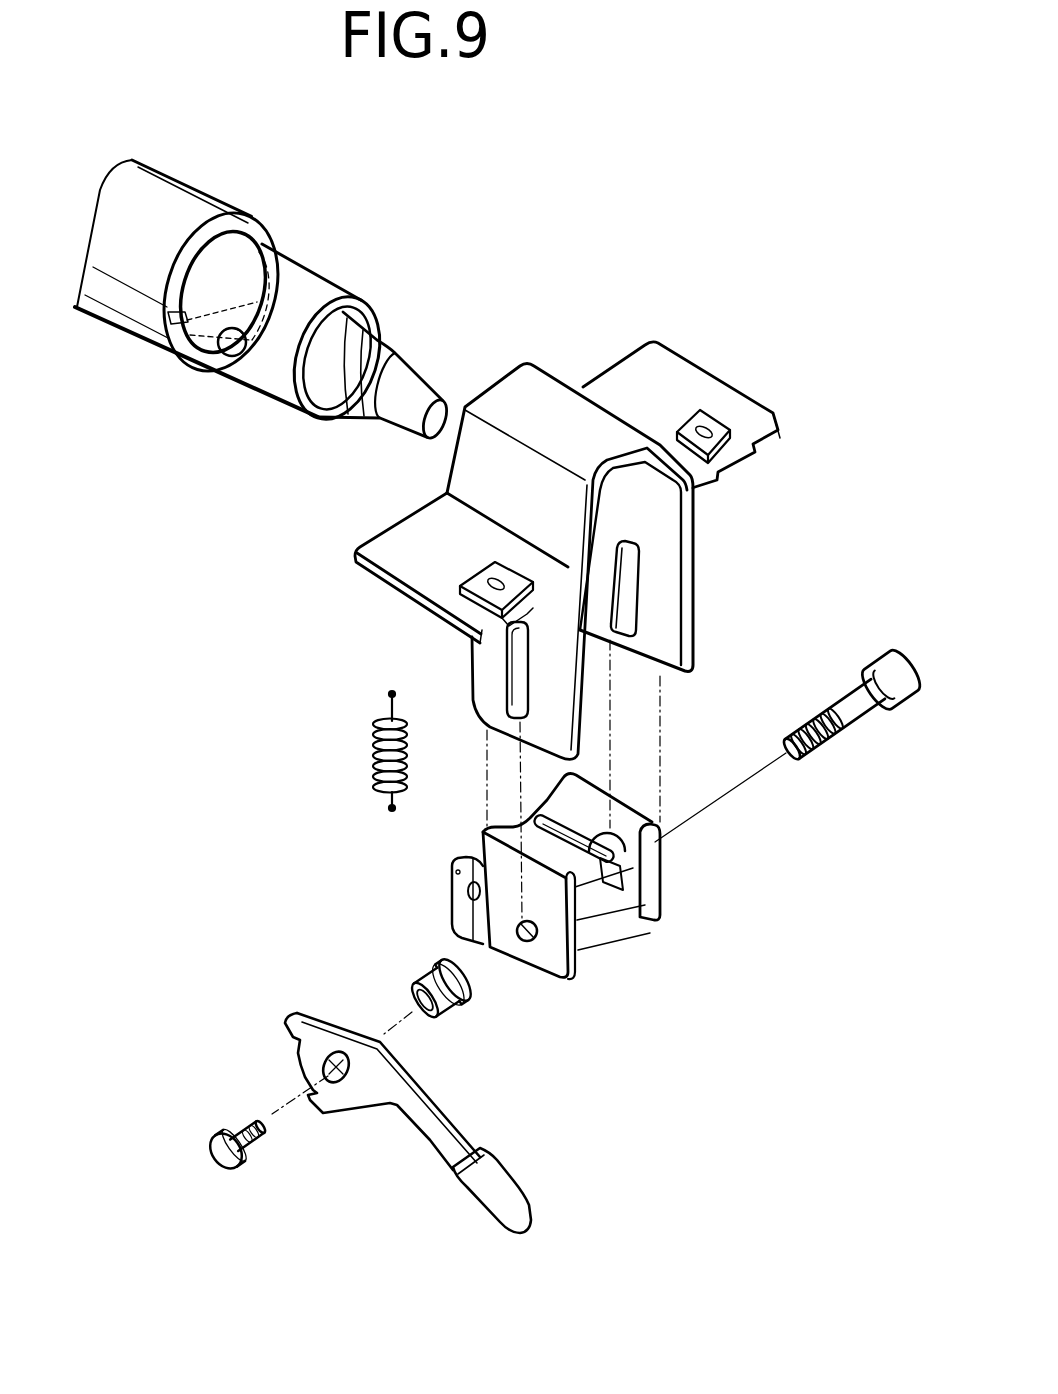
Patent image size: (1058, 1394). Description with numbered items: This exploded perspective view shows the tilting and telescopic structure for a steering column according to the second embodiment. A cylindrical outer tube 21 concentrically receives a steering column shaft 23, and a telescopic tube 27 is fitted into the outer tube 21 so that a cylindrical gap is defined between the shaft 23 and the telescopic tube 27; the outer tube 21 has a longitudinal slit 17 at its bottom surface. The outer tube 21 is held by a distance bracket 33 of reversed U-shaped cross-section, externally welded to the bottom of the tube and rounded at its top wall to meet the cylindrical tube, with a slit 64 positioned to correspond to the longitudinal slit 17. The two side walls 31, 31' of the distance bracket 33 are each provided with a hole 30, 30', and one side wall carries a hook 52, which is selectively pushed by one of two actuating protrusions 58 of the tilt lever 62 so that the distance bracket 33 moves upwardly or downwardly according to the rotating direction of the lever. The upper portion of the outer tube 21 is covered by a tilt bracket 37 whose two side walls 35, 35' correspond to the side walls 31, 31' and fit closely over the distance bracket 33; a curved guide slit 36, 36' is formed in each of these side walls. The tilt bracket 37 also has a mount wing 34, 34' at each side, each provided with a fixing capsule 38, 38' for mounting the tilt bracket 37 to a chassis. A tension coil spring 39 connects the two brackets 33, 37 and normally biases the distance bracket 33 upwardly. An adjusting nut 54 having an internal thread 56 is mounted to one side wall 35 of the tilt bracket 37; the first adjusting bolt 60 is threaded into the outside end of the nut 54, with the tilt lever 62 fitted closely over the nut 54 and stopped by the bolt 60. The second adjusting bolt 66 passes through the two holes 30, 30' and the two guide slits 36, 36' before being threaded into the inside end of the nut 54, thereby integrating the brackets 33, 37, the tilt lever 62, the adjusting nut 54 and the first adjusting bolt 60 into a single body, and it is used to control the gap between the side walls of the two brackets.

The longitudinal slit 17 is at (242, 358).
The outer tube 21 is at (190, 200).
The steering column shaft 23 is at (438, 372).
The telescopic tube 27 is at (320, 282).
The hole 30 is at (526, 983).
The hole 30' is at (621, 917).
The side wall 31 is at (566, 968).
The side wall 31' is at (709, 872).
The distance bracket 33 is at (611, 939).
The mount wing 34 is at (382, 568).
The mount wing 34' is at (681, 382).
The side wall 35 is at (540, 603).
The side wall 35' is at (690, 566).
The curved guide slit 36 is at (473, 675).
The curved guide slit 36' is at (691, 579).
The tilt bracket 37 is at (556, 465).
The fixing capsule 38 is at (425, 605).
The fixing capsule 38' is at (754, 400).
The tension coil spring 39 is at (373, 757).
The hook 52 is at (452, 905).
The adjusting nut 54 is at (452, 1003).
The internal thread 56 is at (410, 1000).
The actuating protrusion 58 is at (389, 1077).
The first adjusting bolt 60 is at (212, 1143).
The tilt lever 62 is at (433, 1140).
The slit 64 is at (612, 887).
The second adjusting bolt 66 is at (873, 705).